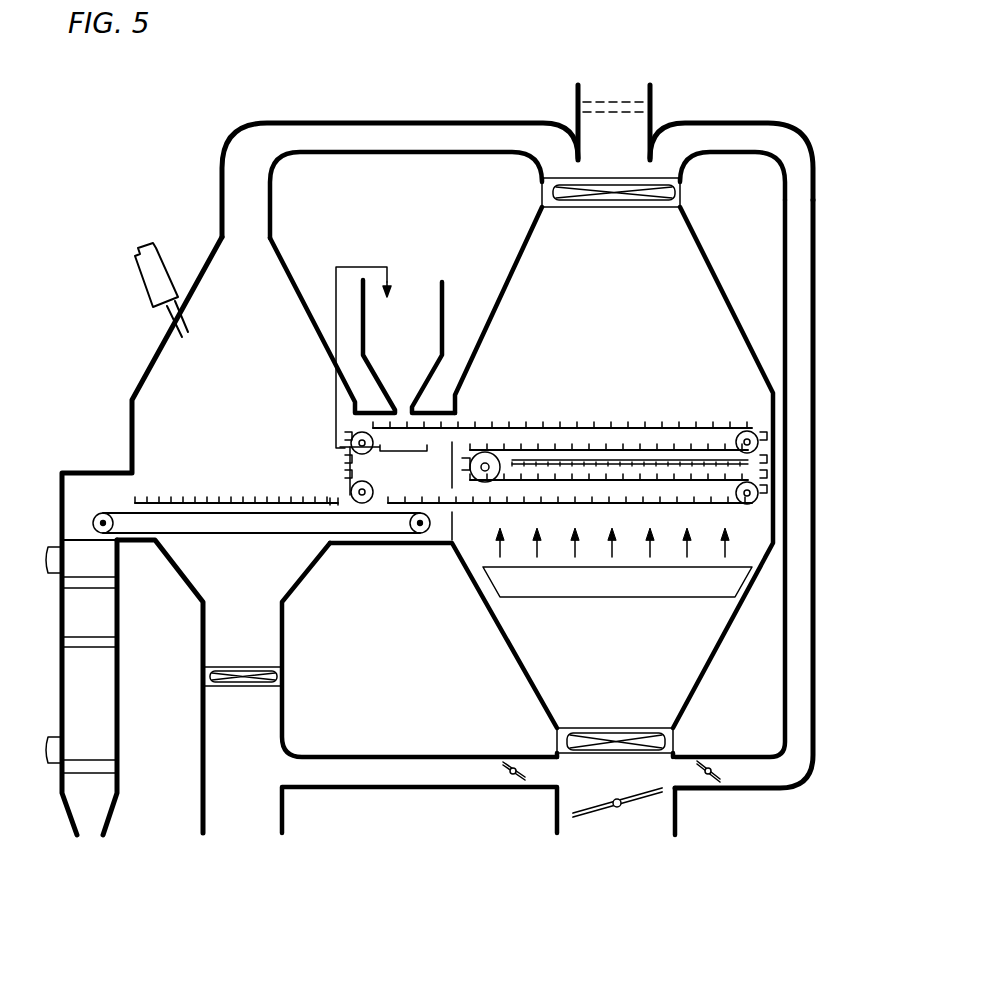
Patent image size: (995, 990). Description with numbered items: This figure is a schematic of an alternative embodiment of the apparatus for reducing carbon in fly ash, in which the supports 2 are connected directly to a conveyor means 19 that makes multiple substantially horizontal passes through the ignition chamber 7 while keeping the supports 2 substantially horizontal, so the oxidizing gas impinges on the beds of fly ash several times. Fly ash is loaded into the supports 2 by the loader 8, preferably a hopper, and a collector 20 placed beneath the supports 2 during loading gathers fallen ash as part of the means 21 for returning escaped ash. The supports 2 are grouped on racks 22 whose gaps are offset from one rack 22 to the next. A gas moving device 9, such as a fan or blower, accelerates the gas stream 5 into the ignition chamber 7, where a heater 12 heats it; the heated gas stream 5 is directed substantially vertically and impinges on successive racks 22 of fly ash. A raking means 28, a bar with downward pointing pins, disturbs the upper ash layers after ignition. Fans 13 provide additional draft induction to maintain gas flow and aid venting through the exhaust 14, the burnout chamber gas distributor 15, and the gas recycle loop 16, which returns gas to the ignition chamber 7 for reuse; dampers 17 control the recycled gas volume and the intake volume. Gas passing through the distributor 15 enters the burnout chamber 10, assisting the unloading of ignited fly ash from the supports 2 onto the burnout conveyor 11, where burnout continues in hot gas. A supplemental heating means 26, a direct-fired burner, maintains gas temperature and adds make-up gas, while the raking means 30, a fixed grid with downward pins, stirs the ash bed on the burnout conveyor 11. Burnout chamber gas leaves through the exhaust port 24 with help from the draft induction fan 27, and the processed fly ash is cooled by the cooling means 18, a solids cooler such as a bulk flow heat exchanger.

The supports 2 is at (550, 425).
The gas stream 5 is at (612, 545).
The ignition chamber 7 is at (527, 235).
The loader 8 is at (443, 293).
The gas moving device 9 is at (575, 742).
The burnout chamber 10 is at (130, 420).
The burnout conveyor 11 is at (247, 543).
The heater 12 is at (730, 580).
The fans 13 is at (665, 193).
The exhaust 14 is at (600, 105).
The burnout chamber gas distributor 15 is at (238, 185).
The gas recycle loop 16 is at (815, 305).
The damper 17 is at (507, 778).
The means for cooling the fly ash 18 is at (100, 618).
The conveyor means 19 is at (685, 425).
The collector 20 is at (407, 453).
The means for returning ash 21 is at (337, 303).
The rack 22 is at (617, 404).
The exhaust port 24 is at (230, 820).
The supplemental heating means 26 is at (157, 283).
The draft induction fan 27 is at (280, 676).
The raking means 28 is at (748, 462).
The means for raking or stirring 30 is at (226, 500).